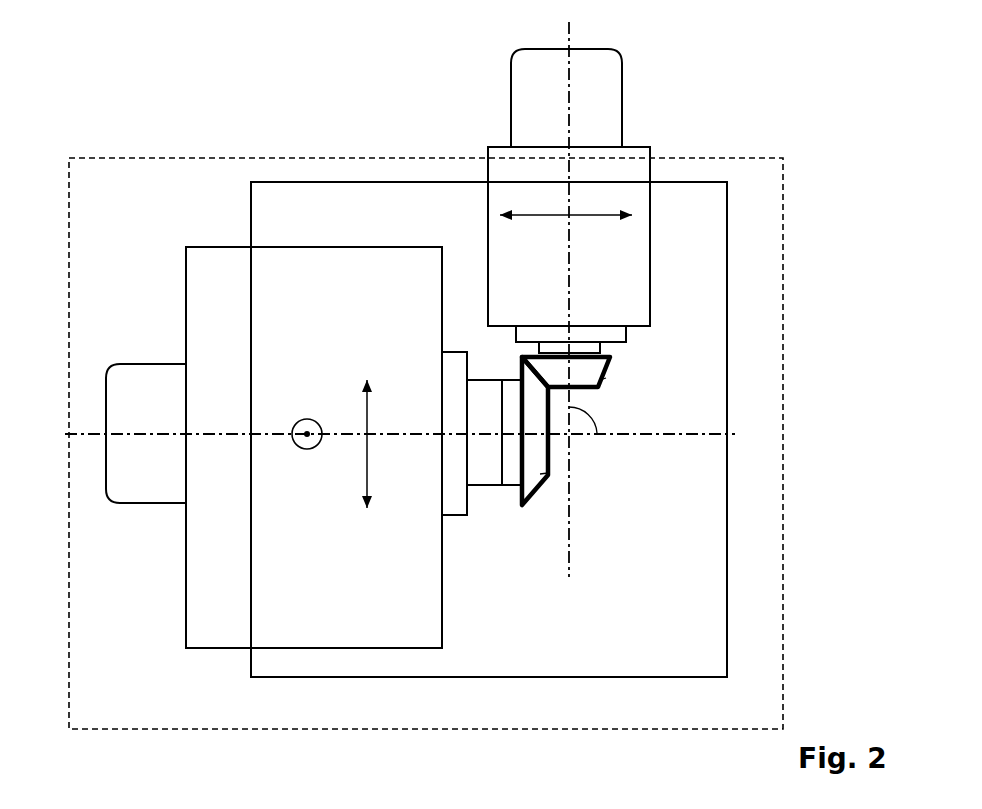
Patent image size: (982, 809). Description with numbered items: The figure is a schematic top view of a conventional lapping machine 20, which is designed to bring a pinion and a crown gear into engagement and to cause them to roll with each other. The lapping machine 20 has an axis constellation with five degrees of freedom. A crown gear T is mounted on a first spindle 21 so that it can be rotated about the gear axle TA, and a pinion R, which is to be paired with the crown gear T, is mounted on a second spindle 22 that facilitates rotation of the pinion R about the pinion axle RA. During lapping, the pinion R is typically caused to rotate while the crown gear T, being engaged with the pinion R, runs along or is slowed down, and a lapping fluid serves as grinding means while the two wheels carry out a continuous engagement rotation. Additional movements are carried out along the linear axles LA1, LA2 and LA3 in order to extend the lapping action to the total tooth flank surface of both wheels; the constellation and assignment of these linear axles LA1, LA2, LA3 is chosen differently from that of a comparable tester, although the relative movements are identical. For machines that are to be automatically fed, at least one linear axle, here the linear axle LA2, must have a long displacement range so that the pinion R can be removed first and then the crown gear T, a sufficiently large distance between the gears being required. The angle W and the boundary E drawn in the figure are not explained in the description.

The lapping machine 20 is at (291, 62).
The first spindle 21 is at (508, 482).
The second spindle 22 is at (600, 350).
The enclosure E is at (780, 350).
The pinion R is at (605, 378).
The crown gear T is at (542, 473).
The angle W is at (583, 422).
The pinion axle RA is at (572, 288).
The gear axle TA is at (382, 434).
The linear axle LA1 is at (566, 205).
The linear axle LA2 is at (387, 444).
The linear axle LA3 is at (308, 421).